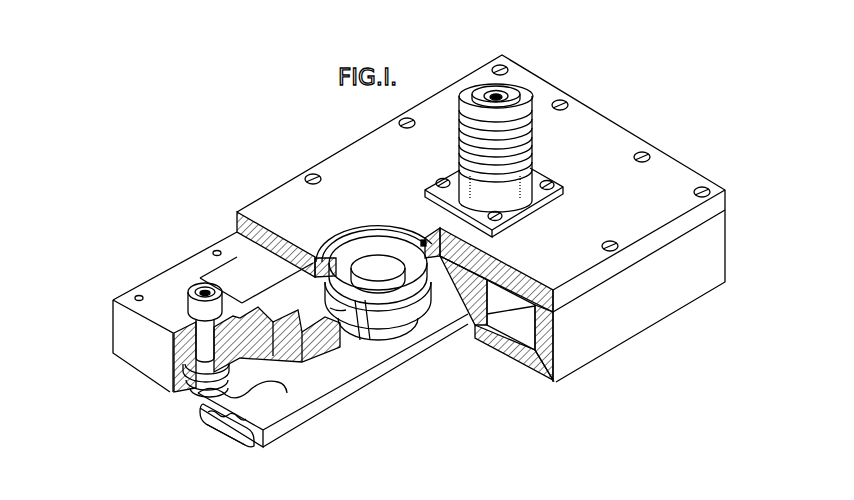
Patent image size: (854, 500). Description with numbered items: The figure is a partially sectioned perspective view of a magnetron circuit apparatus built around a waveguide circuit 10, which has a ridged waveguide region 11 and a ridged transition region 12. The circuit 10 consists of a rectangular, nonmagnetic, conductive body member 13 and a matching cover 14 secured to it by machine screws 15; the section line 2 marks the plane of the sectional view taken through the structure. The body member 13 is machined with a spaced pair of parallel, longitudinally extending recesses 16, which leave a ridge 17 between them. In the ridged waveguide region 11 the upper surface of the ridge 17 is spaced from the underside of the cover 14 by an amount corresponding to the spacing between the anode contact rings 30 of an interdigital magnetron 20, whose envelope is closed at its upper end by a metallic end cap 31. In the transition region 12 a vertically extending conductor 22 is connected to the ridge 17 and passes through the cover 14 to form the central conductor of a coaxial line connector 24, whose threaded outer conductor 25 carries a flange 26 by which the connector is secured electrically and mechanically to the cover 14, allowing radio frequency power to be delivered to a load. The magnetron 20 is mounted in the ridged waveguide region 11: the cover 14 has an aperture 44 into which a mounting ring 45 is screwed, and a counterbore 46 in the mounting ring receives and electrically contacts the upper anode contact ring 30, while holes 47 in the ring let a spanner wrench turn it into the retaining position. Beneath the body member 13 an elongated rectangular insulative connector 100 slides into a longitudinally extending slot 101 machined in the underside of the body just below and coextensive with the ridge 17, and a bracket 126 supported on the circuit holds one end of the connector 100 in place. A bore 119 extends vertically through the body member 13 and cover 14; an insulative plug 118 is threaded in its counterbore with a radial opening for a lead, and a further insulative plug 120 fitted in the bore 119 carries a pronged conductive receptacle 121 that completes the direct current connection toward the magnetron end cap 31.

The section line 2 is at (617, 117).
The waveguide circuit 10 is at (317, 156).
The ridged waveguide region 11 is at (250, 258).
The ridged transition region 12 is at (389, 189).
The body member 13 is at (183, 267).
The cover 14 is at (266, 206).
The machine screws 15 is at (559, 99).
The recesses 16 is at (312, 288).
The ridge 17 is at (314, 350).
The interdigital magnetron 20 is at (350, 291).
The conductor 22 is at (495, 94).
The coaxial line connector 24 is at (498, 142).
The threaded outer conductor 25 is at (460, 120).
The flange 26 is at (534, 201).
The anode contact rings 30 is at (380, 326).
The end cap 31 is at (368, 254).
The aperture 44 is at (303, 267).
The mounting ring 45 is at (329, 254).
The counterbore 46 is at (337, 312).
The holes 47 is at (418, 240).
The connector 100 is at (331, 412).
The slot 101 is at (467, 320).
The insulative plug 118 is at (193, 388).
The bore 119 is at (196, 343).
The insulative plug 120 is at (188, 340).
The pronged conductive receptacle 121 is at (208, 296).
The bracket 126 is at (222, 425).